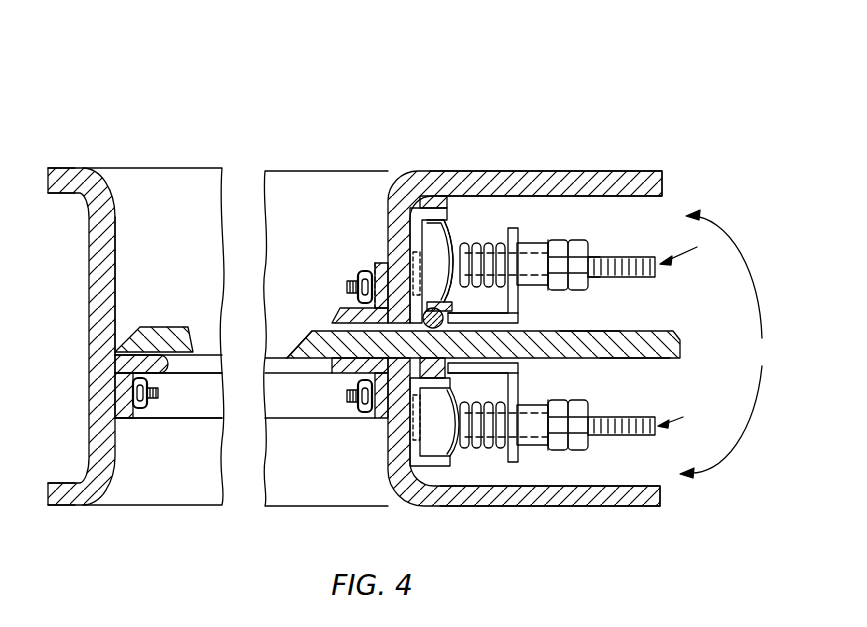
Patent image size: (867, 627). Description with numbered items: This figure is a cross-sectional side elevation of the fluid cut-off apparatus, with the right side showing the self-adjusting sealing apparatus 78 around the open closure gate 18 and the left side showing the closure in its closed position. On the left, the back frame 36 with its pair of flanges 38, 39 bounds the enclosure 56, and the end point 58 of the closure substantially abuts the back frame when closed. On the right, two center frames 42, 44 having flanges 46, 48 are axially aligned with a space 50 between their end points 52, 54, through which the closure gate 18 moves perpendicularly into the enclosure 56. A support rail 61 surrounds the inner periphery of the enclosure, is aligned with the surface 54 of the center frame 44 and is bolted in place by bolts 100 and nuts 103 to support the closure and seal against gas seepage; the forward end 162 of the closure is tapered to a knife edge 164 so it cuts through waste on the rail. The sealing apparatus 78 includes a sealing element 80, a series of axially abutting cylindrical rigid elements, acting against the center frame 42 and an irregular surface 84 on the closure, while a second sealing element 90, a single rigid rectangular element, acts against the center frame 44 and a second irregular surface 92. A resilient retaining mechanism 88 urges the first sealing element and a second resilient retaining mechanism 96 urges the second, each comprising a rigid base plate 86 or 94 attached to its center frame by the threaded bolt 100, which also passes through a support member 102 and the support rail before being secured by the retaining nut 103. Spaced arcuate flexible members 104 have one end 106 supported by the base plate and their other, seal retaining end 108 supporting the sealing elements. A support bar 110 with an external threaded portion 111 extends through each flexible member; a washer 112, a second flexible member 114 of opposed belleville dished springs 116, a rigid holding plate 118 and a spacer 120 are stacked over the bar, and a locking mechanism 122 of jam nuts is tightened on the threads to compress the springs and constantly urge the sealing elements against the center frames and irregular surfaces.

The closure gate 18 is at (676, 333).
The back frame 36 is at (88, 312).
The flange 38 is at (66, 505).
The flange 39 is at (80, 168).
The center frame 42 is at (392, 192).
The center frame 44 is at (387, 470).
The flange 46 is at (542, 172).
The flange 48 is at (580, 507).
The space 50 is at (310, 328).
The end point 52 is at (360, 308).
The end point 54 is at (348, 387).
The enclosure 56 is at (168, 222).
The end point 58 is at (128, 345).
The support rail 61 is at (203, 385).
The self-adjusting sealing apparatus 78 is at (723, 344).
The sealing element 80 is at (403, 238).
The irregular surface 84 is at (575, 331).
The rigid base plate 86 is at (471, 338).
The resilient retaining mechanism 88 is at (688, 248).
The second sealing element 90 is at (412, 418).
The second irregular surface 92 is at (655, 359).
The rigid base plate 94 is at (435, 466).
The second resilient retaining mechanism 96 is at (679, 414).
The threaded bolt 100 is at (242, 336).
The support member 102 is at (378, 272).
The retaining nut 103 is at (137, 407).
The flexible member 104 is at (458, 240).
The spring arm 106 is at (450, 232).
The seal retaining end 108 is at (452, 302).
The support bar 110 is at (652, 257).
The external threaded portion 111 is at (598, 257).
The washer 112 is at (530, 244).
The second flexible member 114 is at (474, 236).
The belleville dished springs 116 is at (513, 245).
The rigid holding plate 118 is at (552, 240).
The spacer 120 is at (572, 240).
The locking mechanism 122 is at (588, 282).
The forward end 162 is at (295, 352).
The knife edge 164 is at (262, 352).